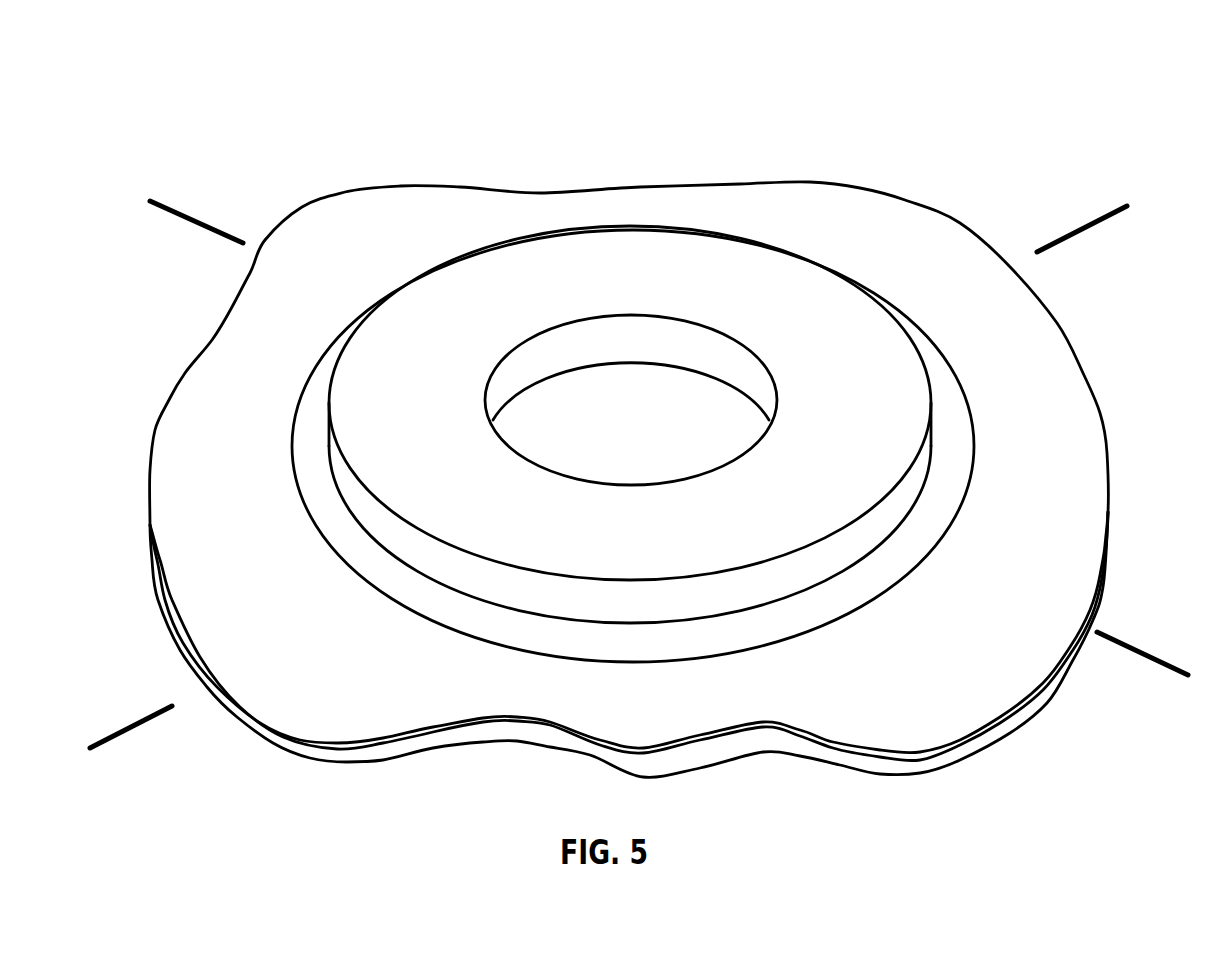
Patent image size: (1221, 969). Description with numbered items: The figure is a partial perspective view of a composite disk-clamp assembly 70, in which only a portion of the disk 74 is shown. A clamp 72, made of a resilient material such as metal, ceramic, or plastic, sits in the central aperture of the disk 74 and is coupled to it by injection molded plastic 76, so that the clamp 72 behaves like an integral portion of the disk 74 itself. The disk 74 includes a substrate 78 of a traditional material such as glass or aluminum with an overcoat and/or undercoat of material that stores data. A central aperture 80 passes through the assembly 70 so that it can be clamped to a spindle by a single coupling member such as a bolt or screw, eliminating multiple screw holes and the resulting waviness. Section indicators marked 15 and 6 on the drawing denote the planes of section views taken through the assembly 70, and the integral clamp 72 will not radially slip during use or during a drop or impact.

The composite disk-clamp assembly 70 is at (313, 154).
The clamp 72 is at (752, 308).
The disk 74 is at (1060, 413).
The injection molded plastic 76 is at (897, 555).
The substrate 78 is at (710, 757).
The central aperture 80 is at (638, 338).
The section line 15- 15 is at (175, 208).
The section line 6- 6 is at (1099, 223).